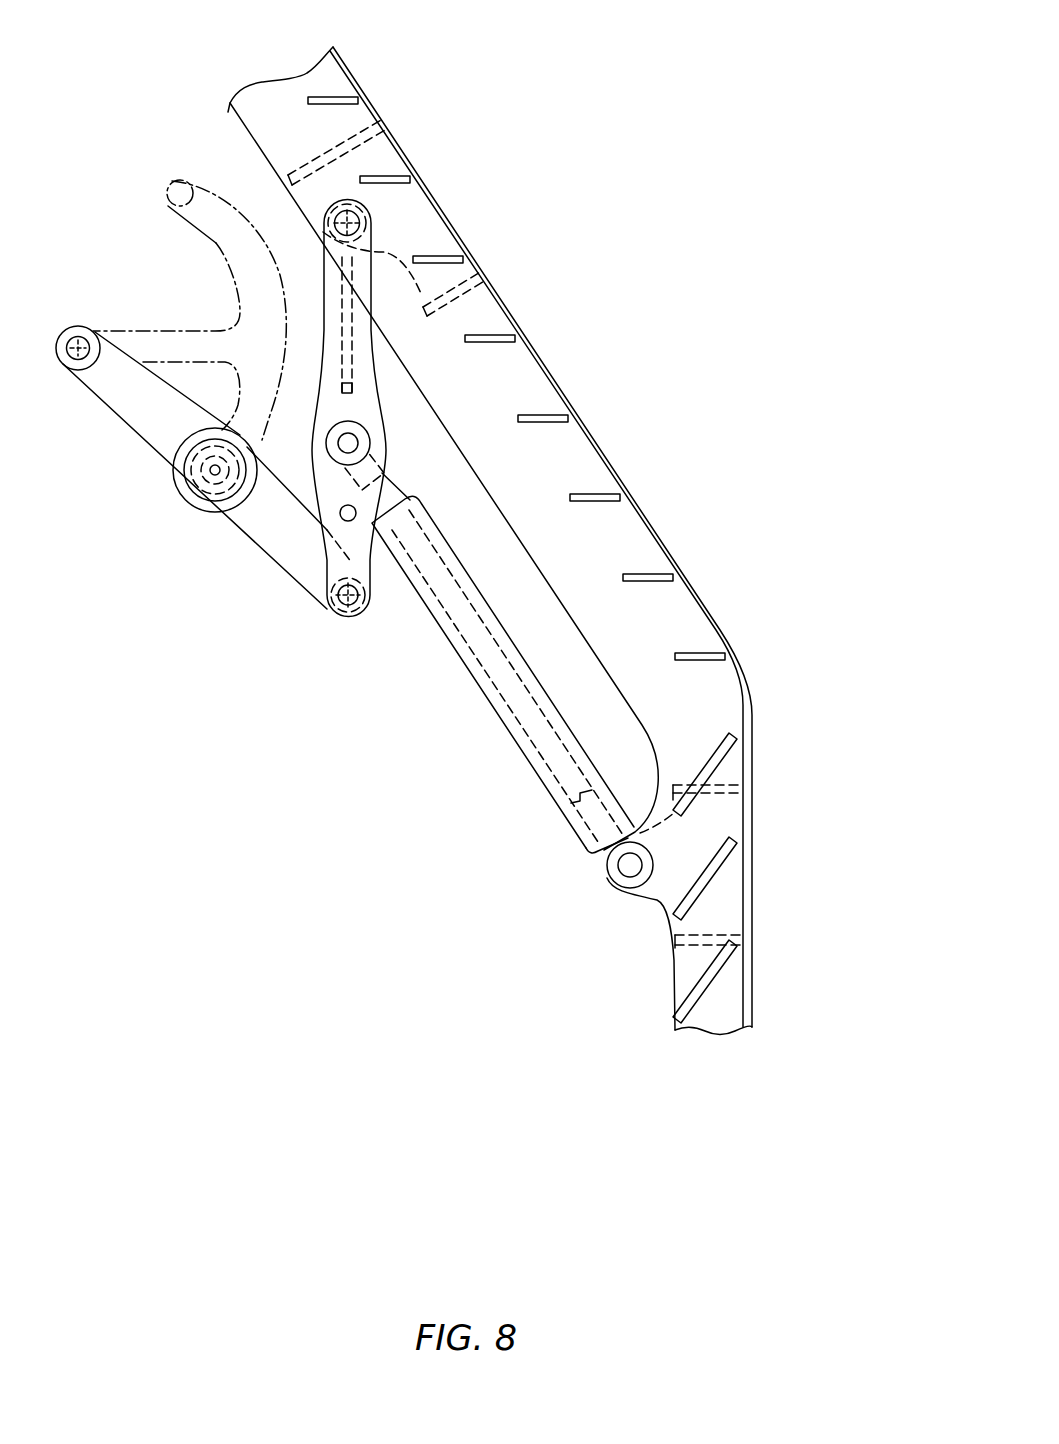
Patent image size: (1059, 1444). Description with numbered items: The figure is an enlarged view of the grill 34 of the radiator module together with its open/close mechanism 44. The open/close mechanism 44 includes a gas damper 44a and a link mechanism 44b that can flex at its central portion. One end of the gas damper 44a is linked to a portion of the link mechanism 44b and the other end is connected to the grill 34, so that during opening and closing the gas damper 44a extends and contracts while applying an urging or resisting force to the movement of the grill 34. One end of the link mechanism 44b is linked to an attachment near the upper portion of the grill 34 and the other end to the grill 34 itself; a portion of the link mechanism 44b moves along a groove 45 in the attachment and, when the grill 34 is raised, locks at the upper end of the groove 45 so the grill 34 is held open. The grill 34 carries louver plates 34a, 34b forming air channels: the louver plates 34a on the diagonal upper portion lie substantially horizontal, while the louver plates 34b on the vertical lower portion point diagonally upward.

The grill 34 is at (663, 84).
The louver plates 34a is at (337, 94).
The louver plates 34b is at (732, 748).
The open/close mechanism 44 is at (208, 656).
The gas damper 44a is at (490, 704).
The link mechanism 44b is at (270, 540).
The groove 45 is at (214, 243).